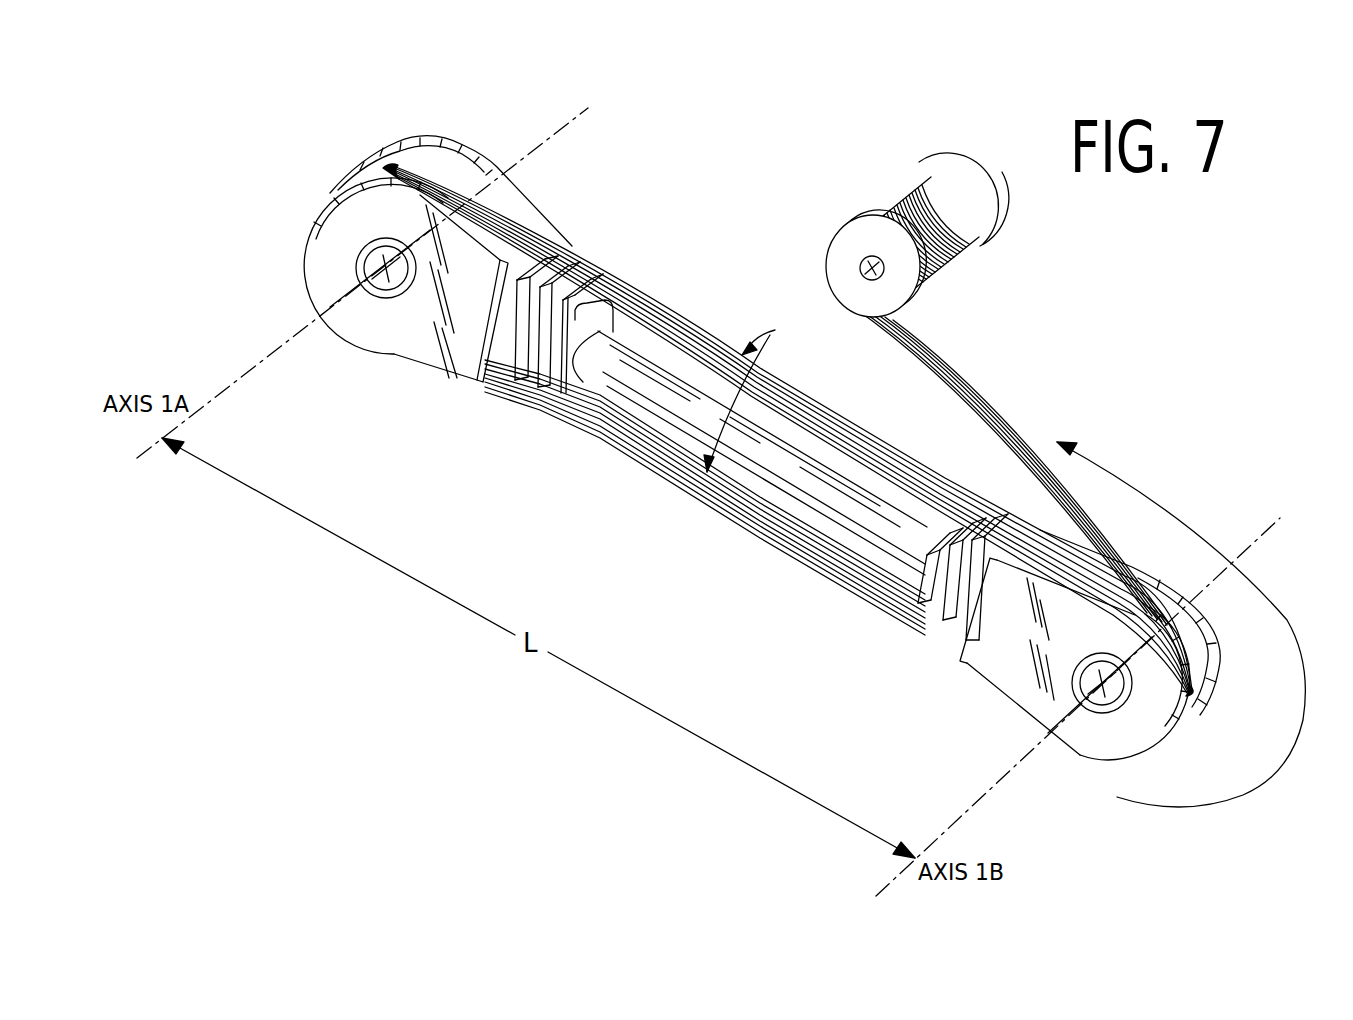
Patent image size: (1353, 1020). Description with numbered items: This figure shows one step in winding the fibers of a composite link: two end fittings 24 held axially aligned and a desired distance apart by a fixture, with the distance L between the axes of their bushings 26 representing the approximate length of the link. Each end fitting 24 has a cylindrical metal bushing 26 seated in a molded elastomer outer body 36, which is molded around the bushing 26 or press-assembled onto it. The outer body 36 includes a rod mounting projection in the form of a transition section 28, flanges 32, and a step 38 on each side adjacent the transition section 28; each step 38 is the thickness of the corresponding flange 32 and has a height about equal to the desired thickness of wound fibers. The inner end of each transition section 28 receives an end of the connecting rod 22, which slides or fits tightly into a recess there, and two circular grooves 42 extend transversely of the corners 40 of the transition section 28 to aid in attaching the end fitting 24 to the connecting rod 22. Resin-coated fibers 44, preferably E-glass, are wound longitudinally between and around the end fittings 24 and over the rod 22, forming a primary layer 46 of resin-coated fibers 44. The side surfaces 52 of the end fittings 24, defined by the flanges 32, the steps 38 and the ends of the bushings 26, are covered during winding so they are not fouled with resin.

The connecting rod 22 is at (623, 405).
The end fitting 24 is at (393, 168).
The bushing 26 is at (363, 267).
The transition section 28 is at (566, 290).
The flange 32 is at (355, 178).
The outer body 36 is at (388, 330).
The step 38 is at (478, 348).
The corner 40 is at (546, 328).
The groove 42 is at (512, 345).
The fibers 44 is at (985, 402).
The primary layer 46 is at (1004, 554).
The side surface 52 is at (350, 322).